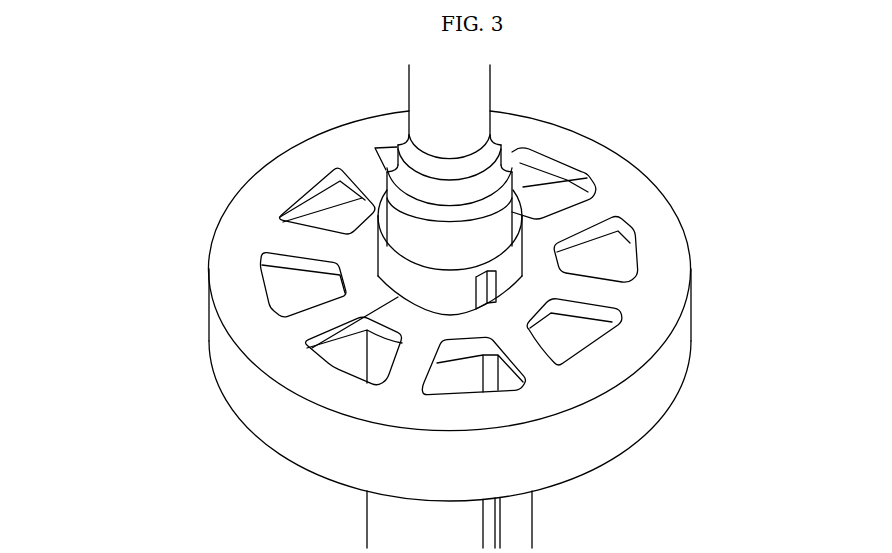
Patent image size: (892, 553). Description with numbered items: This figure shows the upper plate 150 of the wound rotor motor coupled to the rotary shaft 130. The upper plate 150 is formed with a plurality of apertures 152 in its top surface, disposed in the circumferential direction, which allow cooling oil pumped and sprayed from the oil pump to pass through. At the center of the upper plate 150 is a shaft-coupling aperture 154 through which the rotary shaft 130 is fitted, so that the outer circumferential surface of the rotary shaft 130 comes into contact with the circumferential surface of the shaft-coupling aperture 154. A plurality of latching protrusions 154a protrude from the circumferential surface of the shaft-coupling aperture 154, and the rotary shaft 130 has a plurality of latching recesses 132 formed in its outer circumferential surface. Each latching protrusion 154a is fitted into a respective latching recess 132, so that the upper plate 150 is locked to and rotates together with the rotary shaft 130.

The rotary shaft 130 is at (519, 201).
The latching recesses 132 is at (478, 283).
The upper plate 150 is at (286, 143).
The apertures 152 is at (566, 338).
The shaft-coupling aperture 154 is at (365, 317).
The latching protrusions 154a is at (485, 308).